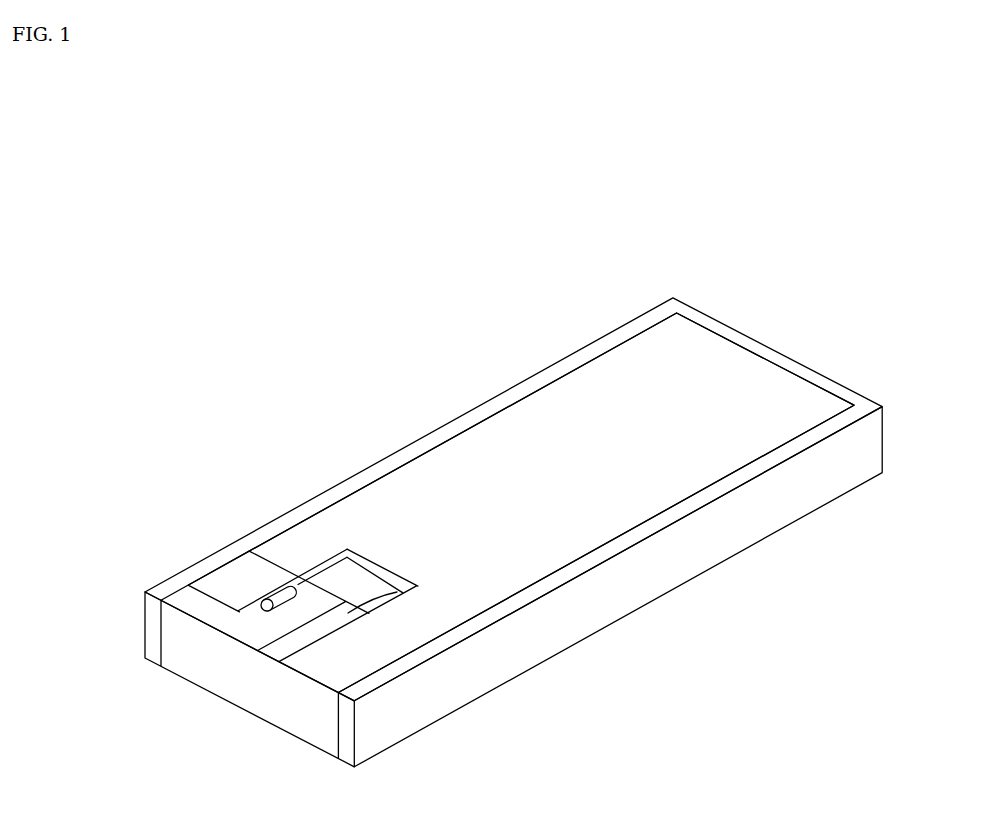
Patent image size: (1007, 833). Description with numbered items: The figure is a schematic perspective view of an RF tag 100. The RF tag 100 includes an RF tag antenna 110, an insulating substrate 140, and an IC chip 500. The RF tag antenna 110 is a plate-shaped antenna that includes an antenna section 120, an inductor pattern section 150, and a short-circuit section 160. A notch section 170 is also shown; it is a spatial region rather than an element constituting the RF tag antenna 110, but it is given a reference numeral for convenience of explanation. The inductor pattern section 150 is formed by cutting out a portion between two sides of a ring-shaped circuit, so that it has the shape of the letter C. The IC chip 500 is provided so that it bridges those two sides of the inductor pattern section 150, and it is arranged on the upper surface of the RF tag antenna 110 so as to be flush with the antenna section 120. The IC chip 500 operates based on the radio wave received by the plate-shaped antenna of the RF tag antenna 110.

The RF tag 100 is at (748, 228).
The RF tag antenna 110 is at (563, 357).
The antenna section 120 is at (507, 440).
The insulating substrate 140 is at (628, 590).
The inductor pattern section 150 is at (408, 589).
The short-circuit section 160 is at (237, 688).
The notch section 170 is at (237, 586).
The IC chip 500 is at (275, 597).